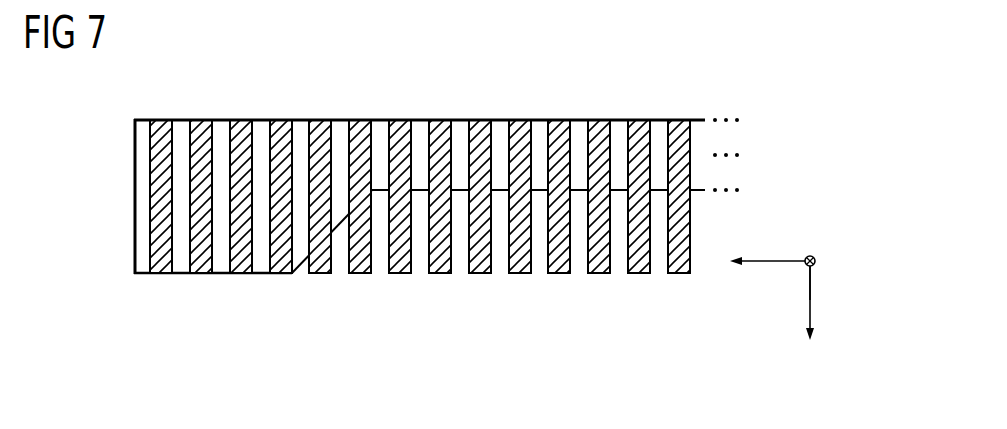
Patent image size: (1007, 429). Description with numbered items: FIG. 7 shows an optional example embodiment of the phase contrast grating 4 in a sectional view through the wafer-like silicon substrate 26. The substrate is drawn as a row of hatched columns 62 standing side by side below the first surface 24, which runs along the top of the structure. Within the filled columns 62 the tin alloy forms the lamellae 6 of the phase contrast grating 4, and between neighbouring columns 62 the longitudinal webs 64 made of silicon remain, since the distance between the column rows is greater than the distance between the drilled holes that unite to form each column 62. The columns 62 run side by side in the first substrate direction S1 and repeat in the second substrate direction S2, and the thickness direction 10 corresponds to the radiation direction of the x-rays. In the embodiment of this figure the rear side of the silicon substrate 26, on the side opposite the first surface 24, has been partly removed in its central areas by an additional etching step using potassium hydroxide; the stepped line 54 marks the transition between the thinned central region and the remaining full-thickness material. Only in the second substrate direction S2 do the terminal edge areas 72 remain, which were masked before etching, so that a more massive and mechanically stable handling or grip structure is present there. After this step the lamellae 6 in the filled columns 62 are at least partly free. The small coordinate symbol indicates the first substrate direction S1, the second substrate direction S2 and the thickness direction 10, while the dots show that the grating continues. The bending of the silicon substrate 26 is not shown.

The phase contrast grating 4 is at (436, 196).
The first surface 24 is at (420, 147).
The silicon substrate 26 is at (260, 118).
The column 62 is at (505, 165).
The lamella 6 is at (518, 128).
The longitudinal web 64 is at (575, 128).
The edge area 72 is at (188, 290).
The step / transition 54 is at (306, 292).
The first substrate direction S1 is at (816, 261).
The second substrate direction S2 is at (763, 262).
The thickness direction 10 is at (812, 306).